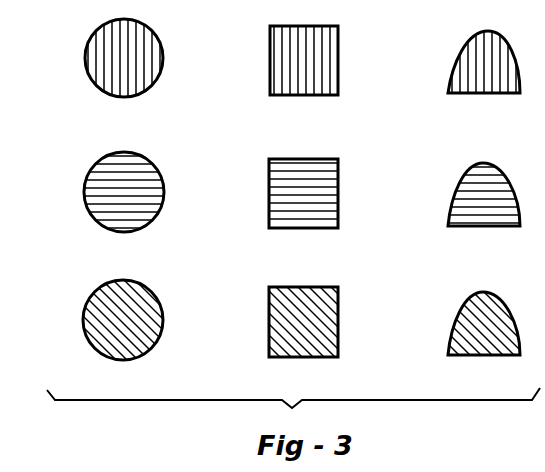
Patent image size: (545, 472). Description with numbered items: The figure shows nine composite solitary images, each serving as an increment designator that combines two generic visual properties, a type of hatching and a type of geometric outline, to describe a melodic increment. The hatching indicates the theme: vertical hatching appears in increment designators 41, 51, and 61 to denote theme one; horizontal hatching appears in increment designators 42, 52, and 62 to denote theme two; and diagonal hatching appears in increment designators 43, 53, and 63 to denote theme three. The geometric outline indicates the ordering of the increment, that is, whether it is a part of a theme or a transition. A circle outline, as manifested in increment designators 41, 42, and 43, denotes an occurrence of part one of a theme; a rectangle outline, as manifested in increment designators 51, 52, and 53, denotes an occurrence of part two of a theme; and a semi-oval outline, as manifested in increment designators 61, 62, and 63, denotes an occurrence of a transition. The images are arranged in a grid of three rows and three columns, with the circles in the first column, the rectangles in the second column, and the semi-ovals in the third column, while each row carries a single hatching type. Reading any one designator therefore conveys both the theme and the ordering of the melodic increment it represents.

The increment designator 41 is at (88, 62).
The increment designator 42 is at (87, 195).
The increment designator 43 is at (85, 325).
The increment designator 51 is at (275, 57).
The increment designator 52 is at (273, 190).
The increment designator 53 is at (272, 318).
The increment designator 61 is at (462, 62).
The increment designator 62 is at (460, 196).
The increment designator 63 is at (462, 326).